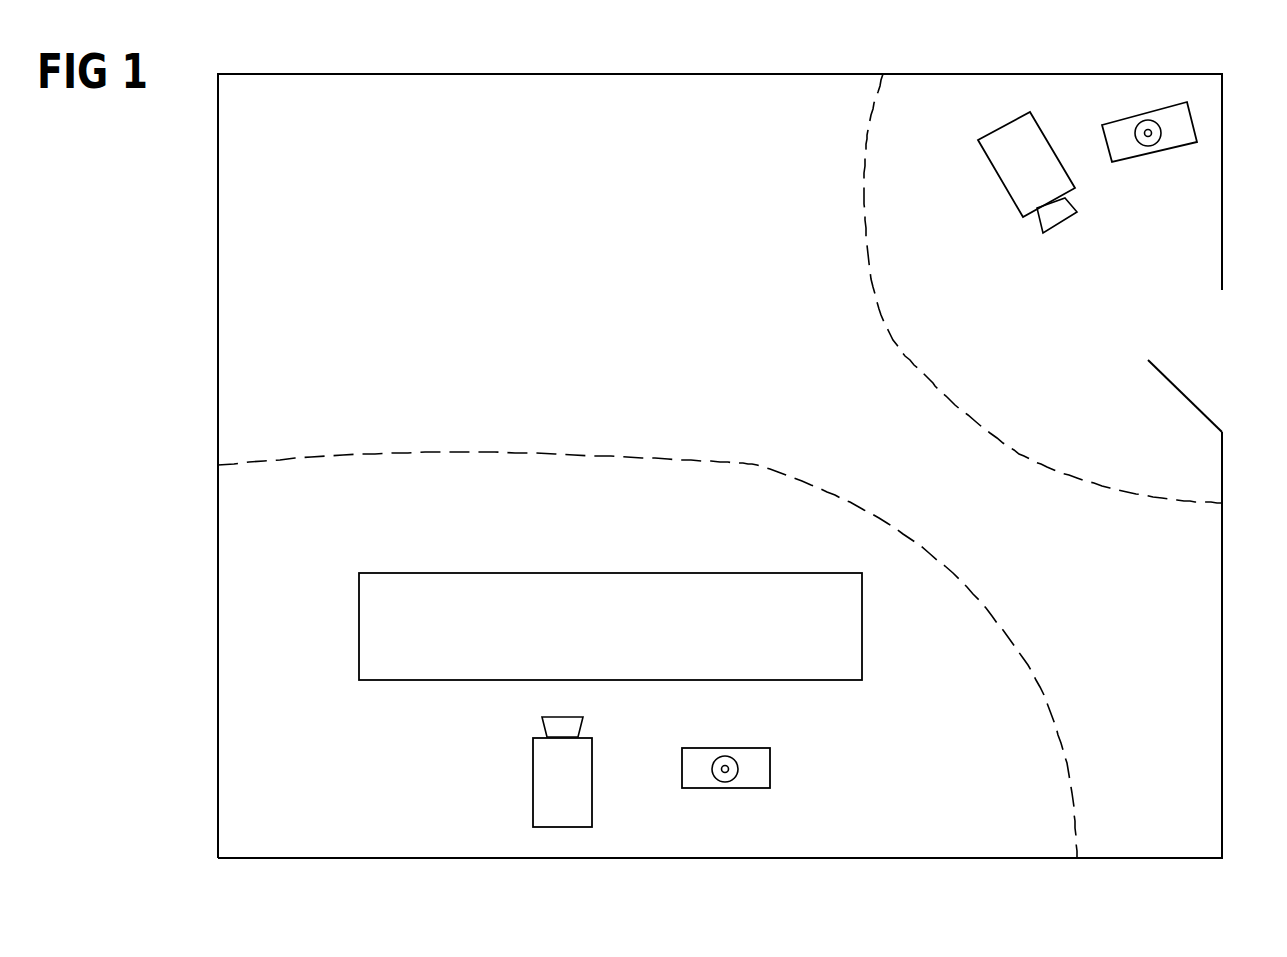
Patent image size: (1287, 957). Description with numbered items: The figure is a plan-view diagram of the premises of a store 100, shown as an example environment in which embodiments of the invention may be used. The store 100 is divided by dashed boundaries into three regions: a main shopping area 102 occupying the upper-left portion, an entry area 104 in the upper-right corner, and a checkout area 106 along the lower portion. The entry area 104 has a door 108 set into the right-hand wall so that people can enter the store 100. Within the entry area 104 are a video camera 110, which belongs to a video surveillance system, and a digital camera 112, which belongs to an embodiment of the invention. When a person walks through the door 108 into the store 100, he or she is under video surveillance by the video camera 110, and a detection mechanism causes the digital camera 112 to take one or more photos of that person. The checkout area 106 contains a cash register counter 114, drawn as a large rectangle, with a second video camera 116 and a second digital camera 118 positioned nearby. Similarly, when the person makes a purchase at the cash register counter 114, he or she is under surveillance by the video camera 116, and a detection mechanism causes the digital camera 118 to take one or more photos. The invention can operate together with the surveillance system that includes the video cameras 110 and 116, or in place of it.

The store 100 is at (195, 797).
The main shopping area 102 is at (380, 176).
The entry area 104 is at (989, 355).
The checkout area 106 is at (308, 513).
The door 108 is at (1193, 401).
The video camera 110 is at (988, 158).
The digital camera 112 is at (1127, 160).
The cash register counter 114 is at (630, 653).
The video camera 116 is at (532, 805).
The digital camera 118 is at (772, 780).